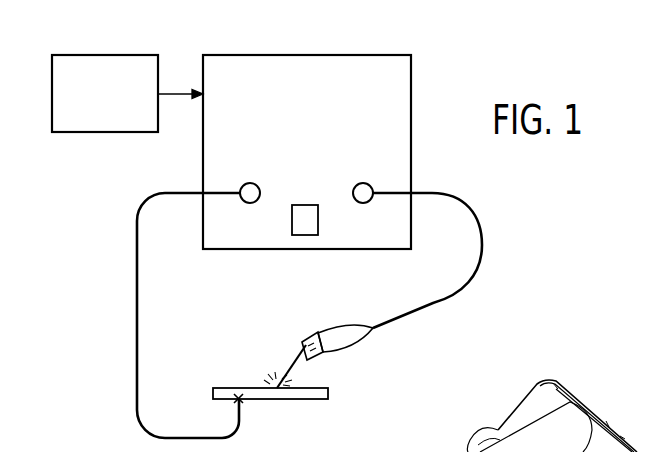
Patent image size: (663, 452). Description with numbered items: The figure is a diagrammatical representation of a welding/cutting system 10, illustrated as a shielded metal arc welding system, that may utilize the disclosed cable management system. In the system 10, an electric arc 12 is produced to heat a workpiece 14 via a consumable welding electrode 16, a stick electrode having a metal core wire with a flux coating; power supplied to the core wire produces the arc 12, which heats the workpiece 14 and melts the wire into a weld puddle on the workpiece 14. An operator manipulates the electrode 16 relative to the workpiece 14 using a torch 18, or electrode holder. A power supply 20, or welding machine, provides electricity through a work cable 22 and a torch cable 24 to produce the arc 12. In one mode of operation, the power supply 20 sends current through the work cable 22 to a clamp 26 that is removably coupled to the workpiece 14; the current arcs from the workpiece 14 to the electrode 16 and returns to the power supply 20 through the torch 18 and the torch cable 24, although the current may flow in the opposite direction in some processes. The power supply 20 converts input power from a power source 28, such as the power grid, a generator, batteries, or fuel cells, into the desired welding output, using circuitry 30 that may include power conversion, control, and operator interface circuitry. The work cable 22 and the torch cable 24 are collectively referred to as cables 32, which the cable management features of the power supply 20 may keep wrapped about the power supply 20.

The welding/cutting system 10 is at (437, 72).
The electric arc 12 is at (255, 353).
The workpiece 14 is at (307, 400).
The consumable welding electrode 16 is at (292, 362).
The torch 18 is at (360, 342).
The power supply 20 is at (307, 55).
The work cable 22 is at (136, 315).
The torch cable 24 is at (467, 210).
The clamp 26 is at (246, 403).
The power source 28 is at (105, 55).
The circuitry 30 is at (305, 235).
The cables 32 is at (507, 268).